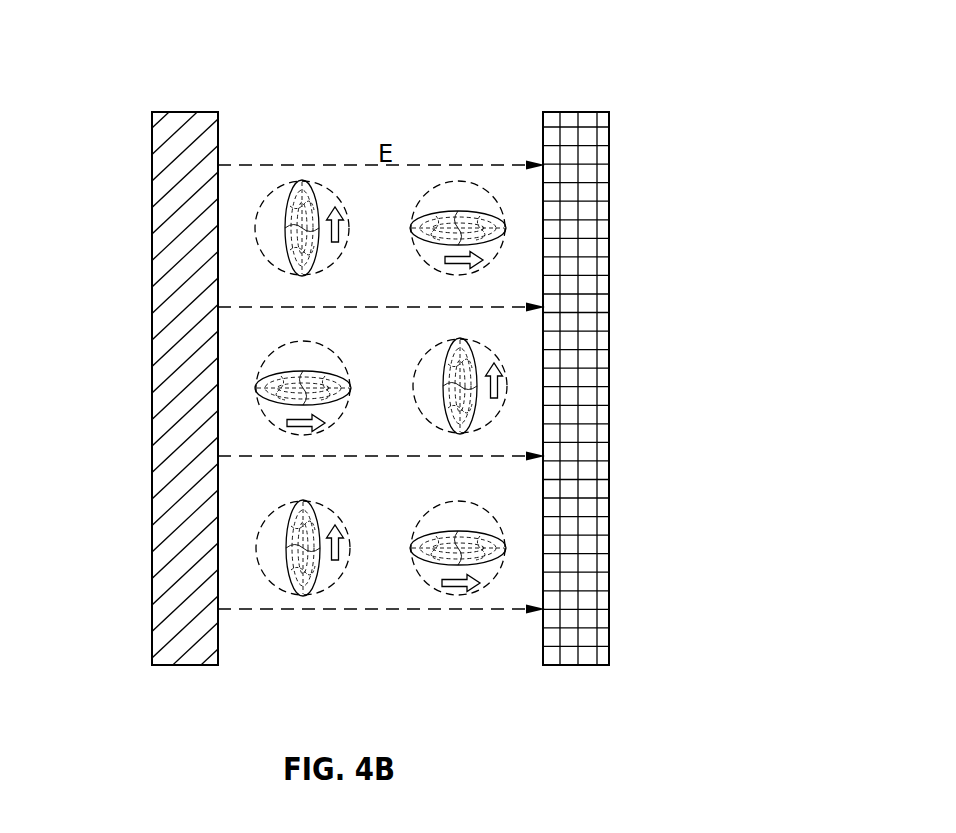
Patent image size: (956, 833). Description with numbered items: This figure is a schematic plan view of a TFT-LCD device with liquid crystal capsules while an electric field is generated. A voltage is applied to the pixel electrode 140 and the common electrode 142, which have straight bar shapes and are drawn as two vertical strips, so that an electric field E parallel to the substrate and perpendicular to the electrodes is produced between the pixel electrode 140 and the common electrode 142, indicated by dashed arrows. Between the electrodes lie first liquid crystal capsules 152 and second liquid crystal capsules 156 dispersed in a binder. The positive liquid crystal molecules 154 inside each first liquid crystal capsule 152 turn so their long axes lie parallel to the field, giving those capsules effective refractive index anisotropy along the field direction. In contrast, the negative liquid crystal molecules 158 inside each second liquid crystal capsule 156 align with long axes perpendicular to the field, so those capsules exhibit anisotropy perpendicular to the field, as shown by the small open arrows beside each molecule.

The pixel electrode 140 is at (188, 127).
The common electrode 142 is at (580, 127).
The first liquid crystal capsule 152 is at (263, 363).
The positive liquid crystal molecule 154 is at (257, 395).
The second liquid crystal capsule 156 is at (285, 540).
The negative liquid crystal molecule 158 is at (290, 582).